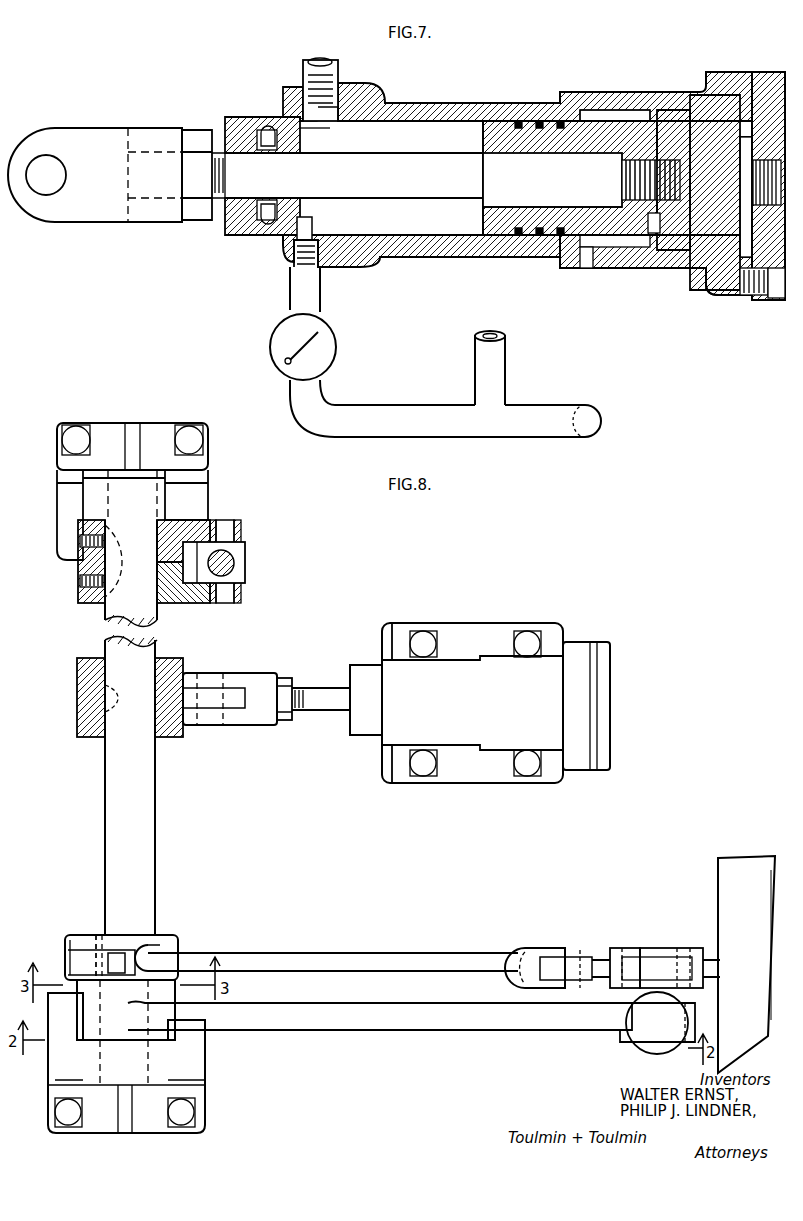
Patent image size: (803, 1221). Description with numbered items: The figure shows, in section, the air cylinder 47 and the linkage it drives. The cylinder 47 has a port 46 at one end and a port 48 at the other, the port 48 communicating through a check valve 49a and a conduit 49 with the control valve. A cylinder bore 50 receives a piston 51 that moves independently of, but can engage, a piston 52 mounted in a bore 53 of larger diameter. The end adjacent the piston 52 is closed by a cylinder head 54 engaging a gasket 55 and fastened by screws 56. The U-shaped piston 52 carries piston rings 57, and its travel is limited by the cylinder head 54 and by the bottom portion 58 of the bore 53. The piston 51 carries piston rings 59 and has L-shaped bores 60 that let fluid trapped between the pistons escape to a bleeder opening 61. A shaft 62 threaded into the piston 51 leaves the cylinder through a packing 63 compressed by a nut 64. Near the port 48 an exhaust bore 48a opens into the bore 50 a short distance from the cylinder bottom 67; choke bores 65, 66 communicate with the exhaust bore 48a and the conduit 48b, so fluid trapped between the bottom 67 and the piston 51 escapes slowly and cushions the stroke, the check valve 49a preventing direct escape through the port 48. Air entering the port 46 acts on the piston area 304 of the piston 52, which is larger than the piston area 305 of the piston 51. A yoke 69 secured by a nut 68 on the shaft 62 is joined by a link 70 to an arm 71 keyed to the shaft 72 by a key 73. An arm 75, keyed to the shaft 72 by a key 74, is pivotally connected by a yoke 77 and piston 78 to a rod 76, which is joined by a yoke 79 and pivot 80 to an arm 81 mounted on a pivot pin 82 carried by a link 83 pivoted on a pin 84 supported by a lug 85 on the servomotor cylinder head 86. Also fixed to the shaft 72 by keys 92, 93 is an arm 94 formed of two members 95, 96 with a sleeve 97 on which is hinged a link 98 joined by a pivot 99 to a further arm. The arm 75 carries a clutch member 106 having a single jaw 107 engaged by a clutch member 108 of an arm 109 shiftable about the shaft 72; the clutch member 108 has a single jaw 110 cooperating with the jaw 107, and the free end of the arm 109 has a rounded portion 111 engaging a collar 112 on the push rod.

In FIG. 7, the port 46 is at (772, 300).
In FIG. 7, the air cylinder 47 is at (428, 103).
In FIG. 8, the air cylinder 47 is at (452, 660).
In FIG. 7, the port 48 is at (312, 224).
In FIG. 7, the exhaust bore 48a is at (338, 121).
In FIG. 7, the conduit 48b is at (525, 360).
In FIG. 7, the conduit 49 is at (320, 297).
In FIG. 7, the check valve 49a is at (336, 345).
In FIG. 7, the cylinder bore 50 is at (455, 118).
In FIG. 7, the piston 51 is at (506, 120).
In FIG. 7, the piston 52 is at (700, 120).
In FIG. 7, the bore 53 is at (628, 110).
In FIG. 7, the cylinder head 54 is at (770, 90).
In FIG. 8, the cylinder head 54 is at (603, 650).
In FIG. 7, the gasket 55 is at (745, 130).
In FIG. 7, the screws 56 is at (752, 295).
In FIG. 7, the piston rings 57 is at (688, 250).
In FIG. 7, the bottom portion 58 is at (596, 108).
In FIG. 7, the piston rings 59 is at (545, 120).
In FIG. 7, the L-shaped bores 60 is at (668, 115).
In FIG. 7, the bleeder opening 61 is at (584, 268).
In FIG. 7, the shaft 62 is at (447, 176).
In FIG. 8, the shaft 62 is at (325, 688).
In FIG. 7, the packing 63 is at (266, 198).
In FIG. 7, the nut 64 is at (250, 150).
In FIG. 7, the choke bore 65 is at (313, 121).
In FIG. 7, the choke bore 66 is at (300, 100).
In FIG. 7, the bottom portion 67 is at (319, 136).
In FIG. 7, the nut 68 is at (193, 135).
In FIG. 8, the nut 68 is at (286, 678).
In FIG. 7, the yoke 69 is at (116, 135).
In FIG. 8, the yoke 69 is at (262, 727).
In FIG. 8, the link 70 is at (235, 688).
In FIG. 8, the arm 71 is at (178, 737).
In FIG. 8, the shaft 72 is at (105, 782).
In FIG. 8, the key 73 is at (78, 697).
In FIG. 8, the key 74 is at (112, 980).
In FIG. 8, the arm 75 is at (80, 959).
In FIG. 8, the rod 76 is at (440, 953).
In FIG. 8, the yoke 77 is at (122, 947).
In FIG. 8, the piston 78 is at (72, 935).
In FIG. 8, the yoke 79 is at (548, 948).
In FIG. 8, the pivot 80 is at (581, 950).
In FIG. 8, the arm 81 is at (603, 958).
In FIG. 8, the pivot pin 82 is at (628, 948).
In FIG. 8, the link 83 is at (660, 948).
In FIG. 8, the pin 84 is at (691, 948).
In FIG. 8, the lug 85 is at (714, 968).
In FIG. 8, the servomotor cylinder head 86 is at (750, 921).
In FIG. 8, the key 92 is at (105, 552).
In FIG. 8, the key 93 is at (108, 525).
In FIG. 8, the arm 94 is at (242, 527).
In FIG. 8, the member 95 is at (193, 520).
In FIG. 8, the member 96 is at (184, 603).
In FIG. 8, the sleeve 97 is at (236, 603).
In FIG. 8, the link 98 is at (240, 558).
In FIG. 8, the pivot 99 is at (222, 522).
In FIG. 8, the clutch member 106 is at (162, 940).
In FIG. 8, the single jaw 107 is at (96, 935).
In FIG. 8, the clutch member 108 is at (175, 985).
In FIG. 8, the arm 109 is at (478, 995).
In FIG. 8, the single jaw 110 is at (170, 1003).
In FIG. 8, the rounded portion 111 is at (672, 1033).
In FIG. 8, the collar 112 is at (645, 1002).
In FIG. 7, the piston area 304 is at (720, 298).
In FIG. 7, the piston area 305 is at (483, 216).